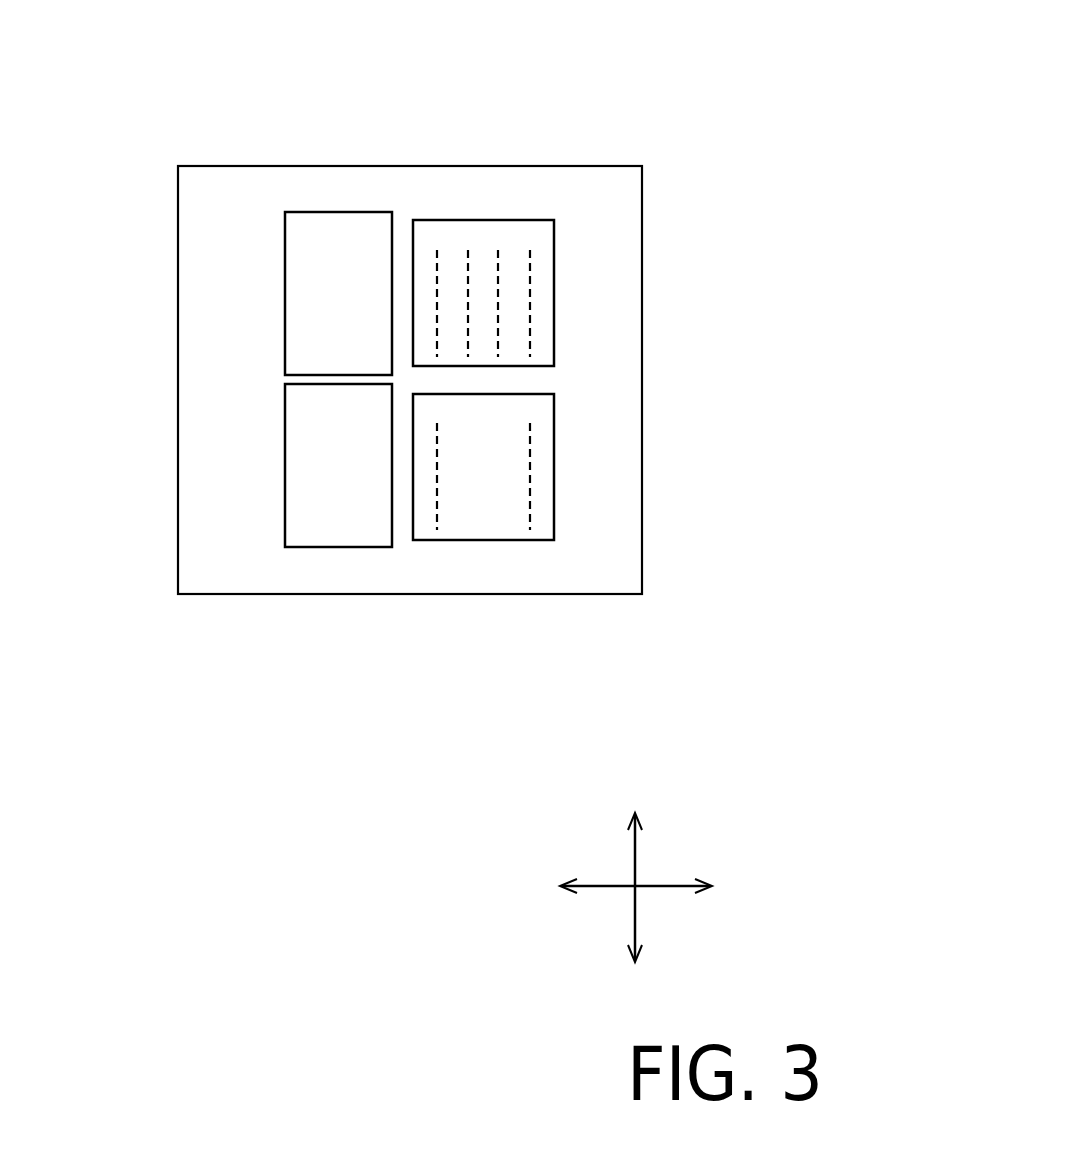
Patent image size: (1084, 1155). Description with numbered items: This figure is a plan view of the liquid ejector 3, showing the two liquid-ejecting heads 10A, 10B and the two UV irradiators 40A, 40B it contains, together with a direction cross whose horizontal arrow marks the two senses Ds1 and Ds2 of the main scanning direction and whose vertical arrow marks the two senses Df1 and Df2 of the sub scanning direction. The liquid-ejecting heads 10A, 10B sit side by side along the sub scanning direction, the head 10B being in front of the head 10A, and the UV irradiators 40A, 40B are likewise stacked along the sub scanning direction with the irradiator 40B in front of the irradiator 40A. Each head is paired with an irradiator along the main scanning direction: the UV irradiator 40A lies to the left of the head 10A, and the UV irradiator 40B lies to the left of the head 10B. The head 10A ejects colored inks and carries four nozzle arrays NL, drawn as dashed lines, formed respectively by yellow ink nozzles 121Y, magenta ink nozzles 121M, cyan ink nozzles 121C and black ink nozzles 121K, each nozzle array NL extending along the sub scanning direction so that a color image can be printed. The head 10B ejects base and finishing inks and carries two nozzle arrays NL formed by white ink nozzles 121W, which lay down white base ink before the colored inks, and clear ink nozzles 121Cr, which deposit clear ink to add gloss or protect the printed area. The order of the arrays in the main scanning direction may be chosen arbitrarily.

The printing apparatus / print head unit housing 3 is at (224, 166).
The UV irradiator 40A is at (338, 212).
The UV irradiator 40B is at (337, 547).
The liquid-ejecting head 10A is at (485, 220).
The liquid-ejecting head 10B is at (485, 540).
The yellow ink nozzles 121Y is at (437, 268).
The magenta ink nozzles 121M is at (468, 268).
The cyan ink nozzles 121C is at (498, 338).
The black ink nozzles 121K is at (530, 308).
The white ink nozzles 121W is at (437, 512).
The clear ink nozzles 121Cr is at (530, 484).
The nozzle array NL is at (541, 275).
The first scanning direction (Ds) Ds1 is at (600, 886).
The second scanning direction (Ds) Ds2 is at (668, 886).
The first feed direction (Df) Df1 is at (635, 913).
The second feed direction (Df) Df2 is at (635, 850).